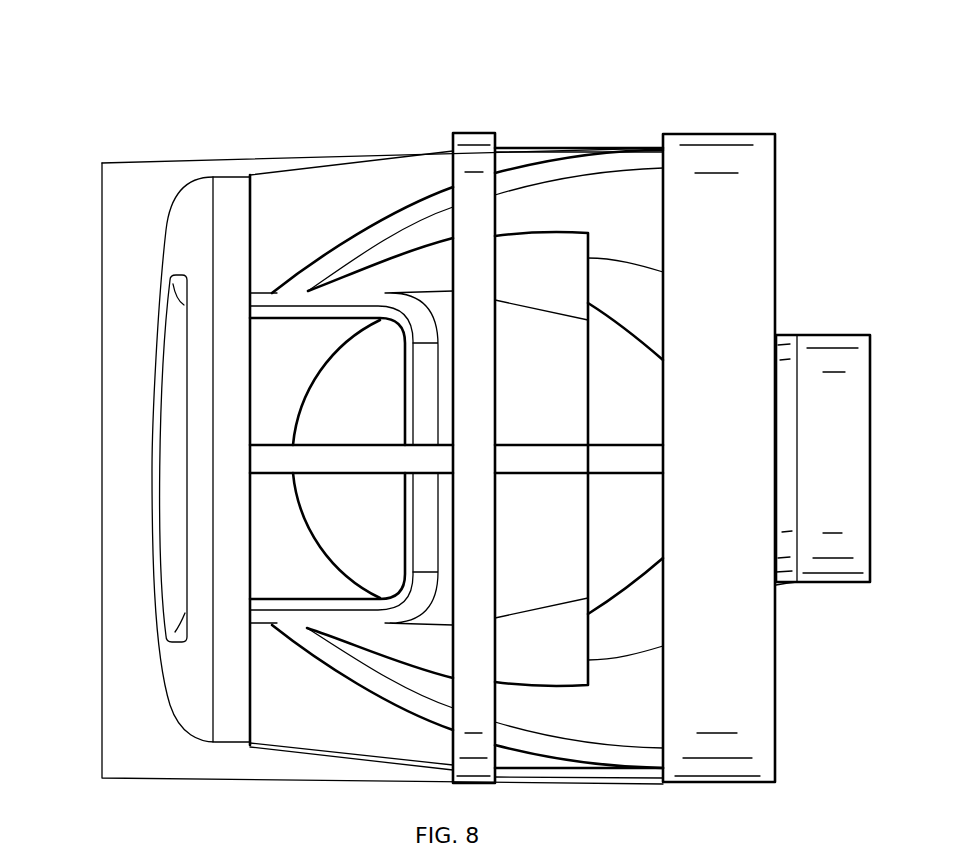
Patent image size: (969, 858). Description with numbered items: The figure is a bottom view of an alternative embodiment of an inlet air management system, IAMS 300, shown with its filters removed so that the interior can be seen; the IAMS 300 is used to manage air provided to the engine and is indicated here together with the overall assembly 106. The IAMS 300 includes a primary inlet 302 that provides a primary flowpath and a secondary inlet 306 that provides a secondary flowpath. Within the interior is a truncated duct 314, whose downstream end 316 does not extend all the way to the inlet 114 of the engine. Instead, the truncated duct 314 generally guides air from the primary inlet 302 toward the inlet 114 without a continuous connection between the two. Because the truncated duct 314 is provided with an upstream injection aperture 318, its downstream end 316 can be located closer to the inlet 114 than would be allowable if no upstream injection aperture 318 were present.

The gas turbine engine 106 is at (300, 82).
The inlet 114 is at (836, 335).
The IAMS 300 is at (142, 598).
The primary inlet 302 is at (178, 508).
The secondary inlet 306 is at (252, 718).
The truncated duct 314 is at (405, 272).
The downstream end 316 is at (592, 258).
The upstream injection aperture 318 is at (380, 353).